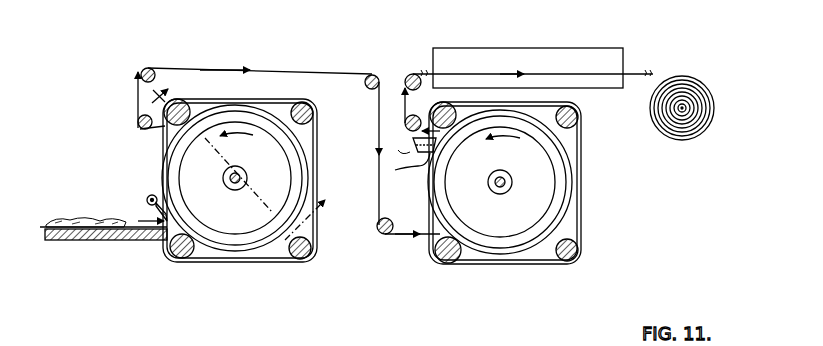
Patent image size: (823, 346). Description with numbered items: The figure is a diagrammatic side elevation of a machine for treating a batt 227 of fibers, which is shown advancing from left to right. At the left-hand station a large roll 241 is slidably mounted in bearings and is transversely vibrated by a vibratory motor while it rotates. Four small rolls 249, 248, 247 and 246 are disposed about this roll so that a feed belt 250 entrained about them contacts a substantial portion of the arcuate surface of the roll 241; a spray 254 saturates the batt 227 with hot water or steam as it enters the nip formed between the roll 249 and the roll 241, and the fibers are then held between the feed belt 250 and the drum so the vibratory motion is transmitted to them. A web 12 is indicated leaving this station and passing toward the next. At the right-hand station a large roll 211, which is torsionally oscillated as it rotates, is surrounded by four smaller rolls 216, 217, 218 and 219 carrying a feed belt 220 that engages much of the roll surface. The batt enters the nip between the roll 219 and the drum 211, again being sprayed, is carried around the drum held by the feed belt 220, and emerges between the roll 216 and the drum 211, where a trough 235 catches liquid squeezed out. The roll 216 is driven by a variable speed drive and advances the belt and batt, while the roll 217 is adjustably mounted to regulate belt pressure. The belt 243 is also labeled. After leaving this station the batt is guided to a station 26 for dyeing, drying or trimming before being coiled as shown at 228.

The web 12 is at (289, 160).
The station 26 is at (567, 58).
The roll 211 is at (470, 205).
The roll 216 is at (446, 108).
The roll 217 is at (578, 119).
The roll 218 is at (568, 264).
The roll 219 is at (447, 265).
The feed belt 220 is at (512, 264).
The batt 227 is at (68, 214).
The coil 228 is at (766, 78).
The trough 235 is at (414, 143).
The roll 241 is at (185, 160).
The belt 243 is at (187, 341).
The roll 246 is at (177, 108).
The roll 247 is at (313, 118).
The roll 248 is at (300, 260).
The roll 249 is at (178, 260).
The feed belt 250 is at (250, 262).
The spray 254 is at (147, 199).